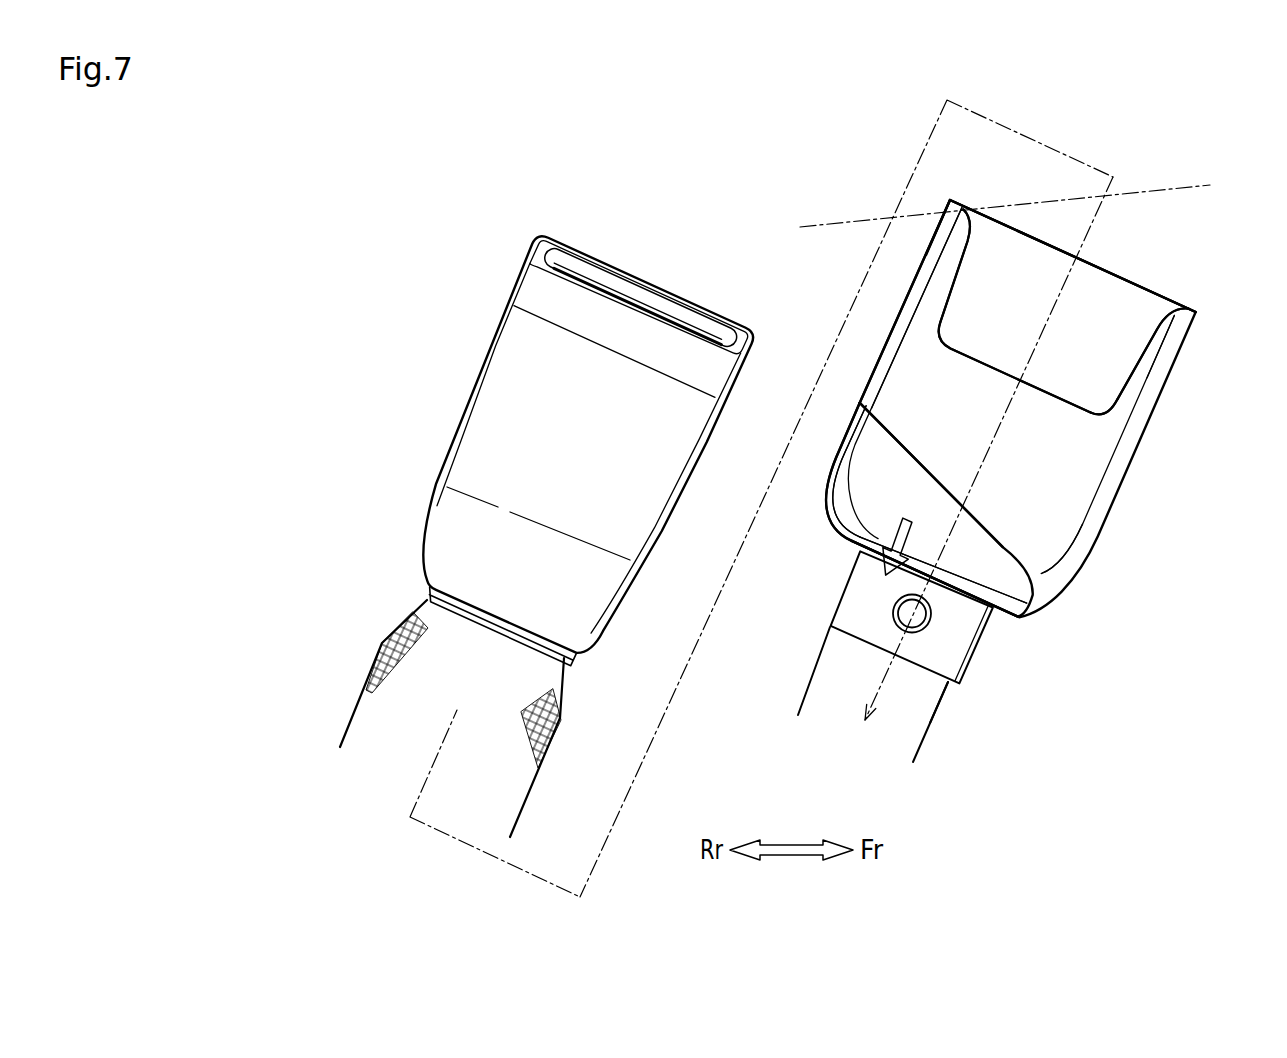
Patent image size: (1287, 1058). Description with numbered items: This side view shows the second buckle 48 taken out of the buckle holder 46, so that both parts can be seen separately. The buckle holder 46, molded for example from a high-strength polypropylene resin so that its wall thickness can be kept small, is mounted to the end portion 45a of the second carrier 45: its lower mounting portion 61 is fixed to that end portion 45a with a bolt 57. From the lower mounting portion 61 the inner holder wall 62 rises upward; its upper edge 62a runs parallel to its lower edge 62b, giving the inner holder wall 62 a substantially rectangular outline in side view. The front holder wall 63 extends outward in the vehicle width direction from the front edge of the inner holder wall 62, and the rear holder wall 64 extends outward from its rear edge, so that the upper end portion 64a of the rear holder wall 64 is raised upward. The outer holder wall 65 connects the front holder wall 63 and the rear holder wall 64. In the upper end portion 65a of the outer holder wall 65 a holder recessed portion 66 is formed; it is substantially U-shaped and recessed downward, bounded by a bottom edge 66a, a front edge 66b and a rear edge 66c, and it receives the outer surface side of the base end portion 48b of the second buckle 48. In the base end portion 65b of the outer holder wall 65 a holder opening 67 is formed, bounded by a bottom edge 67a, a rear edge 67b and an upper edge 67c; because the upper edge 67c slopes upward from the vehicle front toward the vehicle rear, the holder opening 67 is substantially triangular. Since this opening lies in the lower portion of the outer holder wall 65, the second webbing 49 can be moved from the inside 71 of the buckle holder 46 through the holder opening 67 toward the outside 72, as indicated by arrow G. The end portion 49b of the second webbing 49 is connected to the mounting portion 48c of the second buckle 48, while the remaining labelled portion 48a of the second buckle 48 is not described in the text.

The second carrier 45 is at (913, 762).
The end portion of the second carrier 45a is at (938, 697).
The buckle holder 46 is at (1120, 483).
The second buckle 48 is at (478, 378).
The tongue insertion slot 48a is at (653, 282).
The base end portion of the second buckle 48b is at (473, 547).
The mounting portion of the second buckle 48c is at (573, 667).
The second webbing 49 is at (370, 723).
The end portion of the second webbing 49b is at (428, 640).
The bolt 57 is at (913, 635).
The lower mounting portion 61 is at (863, 587).
The inner holder wall 62 is at (1100, 280).
The upper edge of the inner holder wall 62a is at (1037, 233).
The lower edge of the inner holder wall 62b is at (930, 548).
The front holder wall 63 is at (1143, 423).
The rear holder wall 64 is at (910, 310).
The upper end portion of the rear holder wall 64a is at (950, 200).
The outer holder wall 65 is at (980, 407).
The upper end portion of the outer holder wall 65a is at (1167, 330).
The base end portion of the outer holder wall 65b is at (1040, 567).
The holder recessed portion 66 is at (983, 357).
The bottom edge of the holder recessed portion 66a is at (1058, 392).
The front edge of the holder recessed portion 66b is at (1140, 357).
The rear edge of the holder recessed portion 66c is at (960, 287).
The holder opening 67 is at (1002, 550).
The bottom edge of the holder opening 67a is at (955, 585).
The rear edge of the holder opening 67b is at (847, 453).
The upper edge of the holder opening 67c is at (960, 523).
The inside of the buckle holder 71 is at (907, 492).
The outside of the buckle holder 72 is at (787, 656).
The arrow G is at (900, 520).